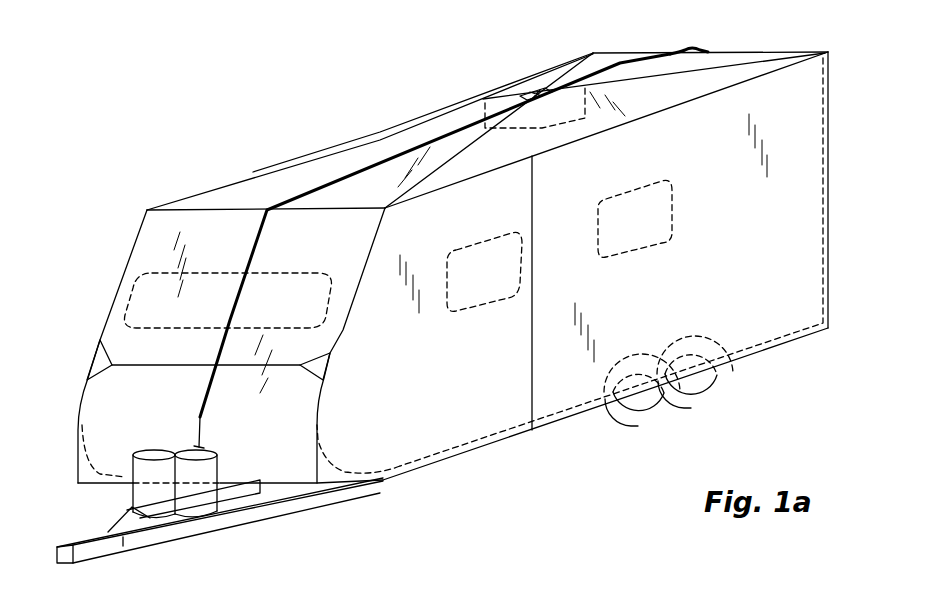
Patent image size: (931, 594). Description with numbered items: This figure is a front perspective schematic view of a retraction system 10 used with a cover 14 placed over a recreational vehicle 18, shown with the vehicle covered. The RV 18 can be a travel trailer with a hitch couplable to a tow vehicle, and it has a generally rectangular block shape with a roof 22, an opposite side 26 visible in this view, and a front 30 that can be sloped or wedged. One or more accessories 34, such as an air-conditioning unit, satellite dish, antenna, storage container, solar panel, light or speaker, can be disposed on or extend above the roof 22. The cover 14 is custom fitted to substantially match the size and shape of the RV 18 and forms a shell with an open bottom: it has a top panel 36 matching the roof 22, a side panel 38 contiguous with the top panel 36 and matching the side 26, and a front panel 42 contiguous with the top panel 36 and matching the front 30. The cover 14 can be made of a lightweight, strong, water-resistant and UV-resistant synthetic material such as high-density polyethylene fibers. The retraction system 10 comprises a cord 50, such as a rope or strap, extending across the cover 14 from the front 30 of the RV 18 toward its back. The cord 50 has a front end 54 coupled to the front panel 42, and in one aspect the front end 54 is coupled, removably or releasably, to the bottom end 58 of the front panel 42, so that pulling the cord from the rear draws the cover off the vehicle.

The retraction system 10 is at (303, 193).
The cover 14 is at (184, 197).
The recreational vehicle (RV) 18 is at (466, 418).
The roof 22 is at (742, 72).
The side 26 is at (741, 330).
The front 30 is at (85, 380).
The accessory 34 is at (565, 100).
The top panel 36 is at (380, 142).
The side panel 38 is at (792, 308).
The front panel 42 is at (90, 432).
The cord 50 is at (636, 57).
The front end 54 is at (200, 421).
The bottom end 58 is at (270, 487).